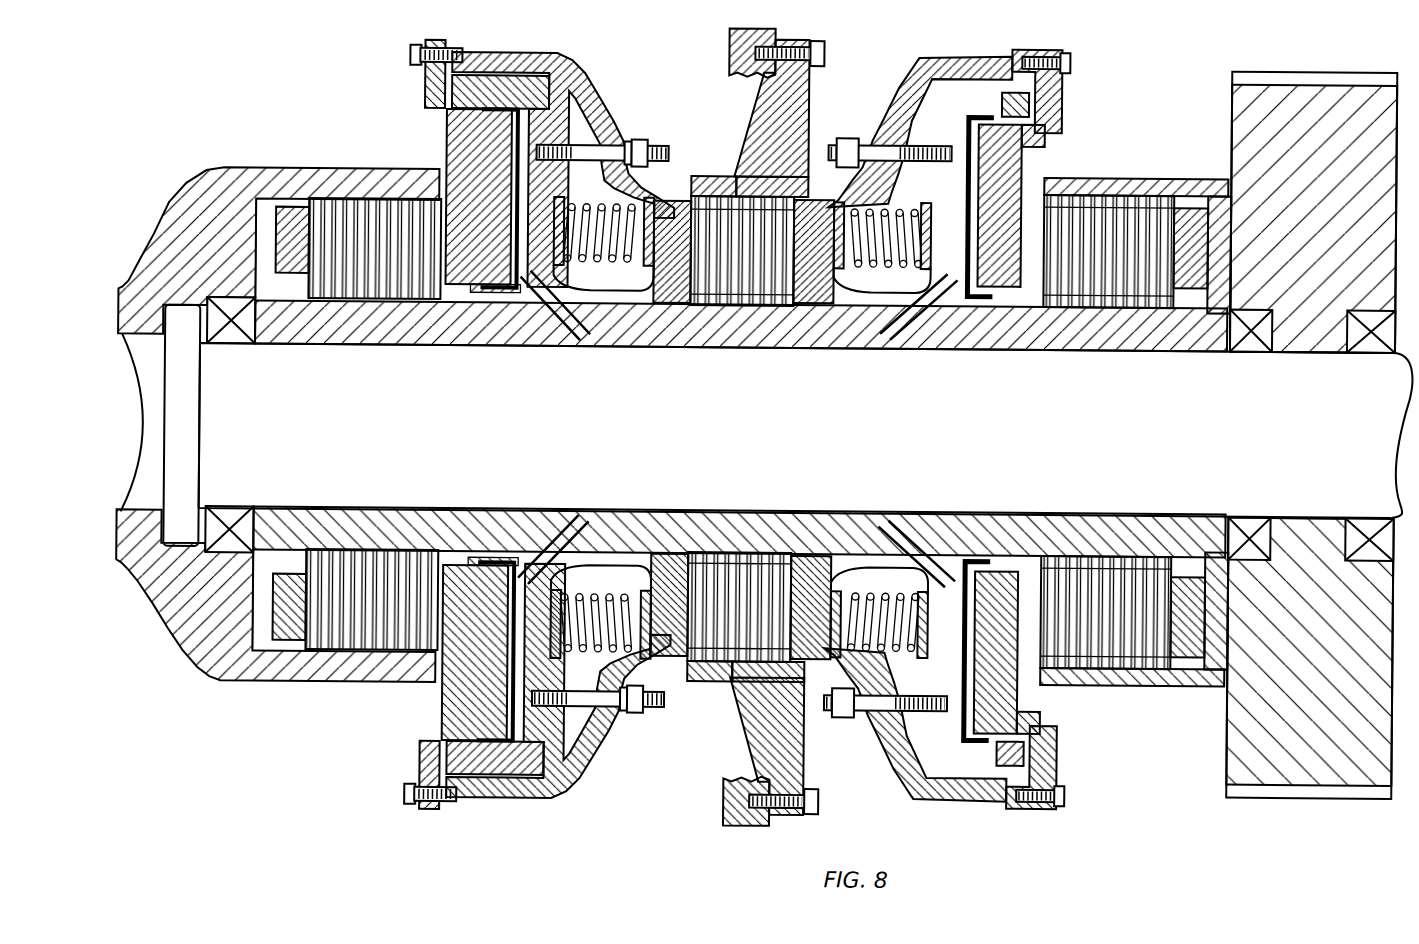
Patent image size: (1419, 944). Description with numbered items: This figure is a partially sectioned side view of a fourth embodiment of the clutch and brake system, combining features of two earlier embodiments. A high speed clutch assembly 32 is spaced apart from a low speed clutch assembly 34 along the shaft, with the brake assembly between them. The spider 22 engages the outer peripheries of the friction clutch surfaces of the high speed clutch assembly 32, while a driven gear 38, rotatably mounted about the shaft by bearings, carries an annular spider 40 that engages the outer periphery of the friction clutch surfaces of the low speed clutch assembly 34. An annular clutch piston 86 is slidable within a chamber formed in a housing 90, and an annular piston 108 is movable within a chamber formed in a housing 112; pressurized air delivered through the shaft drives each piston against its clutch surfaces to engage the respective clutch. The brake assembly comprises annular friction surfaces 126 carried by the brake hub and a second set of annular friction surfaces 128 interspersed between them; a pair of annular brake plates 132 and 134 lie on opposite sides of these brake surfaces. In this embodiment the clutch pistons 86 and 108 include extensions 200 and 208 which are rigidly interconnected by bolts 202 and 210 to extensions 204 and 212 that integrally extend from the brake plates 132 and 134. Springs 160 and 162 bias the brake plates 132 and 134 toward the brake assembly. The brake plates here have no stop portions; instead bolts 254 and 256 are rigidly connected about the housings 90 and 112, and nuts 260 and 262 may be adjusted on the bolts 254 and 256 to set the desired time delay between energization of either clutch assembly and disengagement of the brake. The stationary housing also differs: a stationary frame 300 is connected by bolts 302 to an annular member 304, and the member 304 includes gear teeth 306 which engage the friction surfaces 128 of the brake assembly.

The spider 22 is at (210, 182).
The high speed clutch assembly 32 is at (316, 125).
The low speed clutch assembly 34 is at (1168, 102).
The driven gear 38 is at (1332, 211).
The annular spider 40 is at (1130, 172).
The annular clutch piston 86 is at (465, 145).
The housing 90 is at (462, 90).
The annular piston 108 is at (1005, 180).
The housing 112 is at (1012, 100).
The annular friction surfaces 126 is at (745, 300).
The second set of annular friction surfaces 128 is at (718, 192).
The brake plate 132 is at (660, 282).
The brake plate 134 is at (845, 282).
The spring 160 is at (590, 205).
The spring 162 is at (878, 220).
The extension 200 is at (428, 44).
The bolt 202 is at (424, 60).
The extension 204 is at (548, 56).
The extension 208 is at (1048, 45).
The bolt 210 is at (1070, 58).
The extension 212 is at (960, 55).
The bolt 254 is at (590, 150).
The bolt 256 is at (893, 140).
The nut 260 is at (646, 145).
The nut 262 is at (846, 140).
The stationary frame 300 is at (735, 42).
The bolts 302 is at (822, 48).
The annular member 304 is at (772, 100).
The gear teeth 306 is at (700, 182).